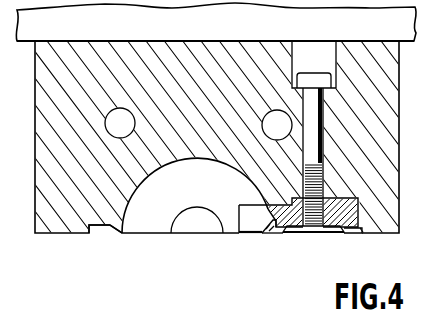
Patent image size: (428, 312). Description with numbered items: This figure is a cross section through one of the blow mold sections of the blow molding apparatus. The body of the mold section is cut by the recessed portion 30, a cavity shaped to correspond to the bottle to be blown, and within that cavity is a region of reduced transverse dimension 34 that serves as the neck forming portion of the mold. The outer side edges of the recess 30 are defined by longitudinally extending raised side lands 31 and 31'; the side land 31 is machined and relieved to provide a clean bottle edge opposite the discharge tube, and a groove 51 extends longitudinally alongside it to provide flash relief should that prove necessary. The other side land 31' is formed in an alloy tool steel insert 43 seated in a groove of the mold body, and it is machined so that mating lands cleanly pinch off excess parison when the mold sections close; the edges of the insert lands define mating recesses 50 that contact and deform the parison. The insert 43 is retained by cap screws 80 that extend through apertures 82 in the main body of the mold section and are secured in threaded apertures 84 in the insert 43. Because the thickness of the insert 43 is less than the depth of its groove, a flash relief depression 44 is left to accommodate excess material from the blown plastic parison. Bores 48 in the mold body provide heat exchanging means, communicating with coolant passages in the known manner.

The bores 48 is at (124, 110).
The cap screws 80 is at (314, 80).
The apertures 82 is at (317, 122).
The threaded apertures 84 is at (320, 176).
The recessed portion 30 is at (147, 224).
The region of reduced transverse dimension 34 is at (185, 212).
The groove 51 is at (98, 237).
The side land 31 is at (112, 248).
The side land 31' is at (274, 246).
The mating recesses 50 is at (263, 233).
The alloy tool steel insert 43 is at (339, 218).
The flash relief depression 44 is at (349, 232).